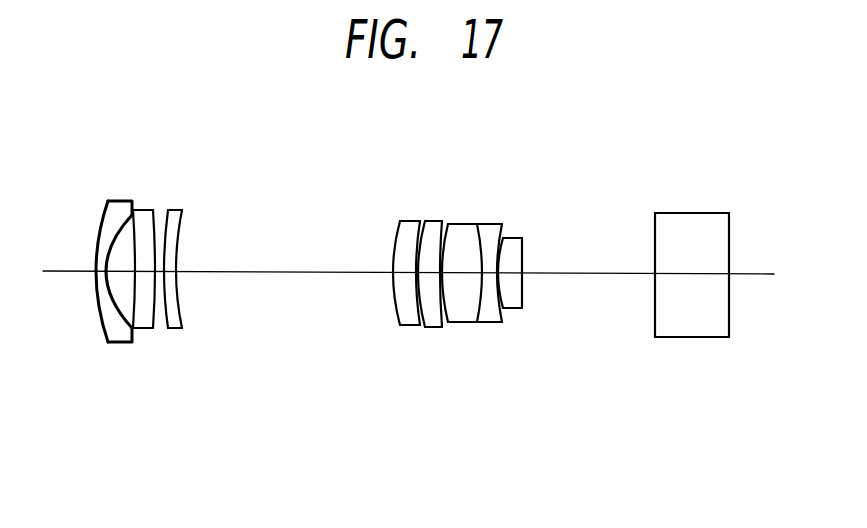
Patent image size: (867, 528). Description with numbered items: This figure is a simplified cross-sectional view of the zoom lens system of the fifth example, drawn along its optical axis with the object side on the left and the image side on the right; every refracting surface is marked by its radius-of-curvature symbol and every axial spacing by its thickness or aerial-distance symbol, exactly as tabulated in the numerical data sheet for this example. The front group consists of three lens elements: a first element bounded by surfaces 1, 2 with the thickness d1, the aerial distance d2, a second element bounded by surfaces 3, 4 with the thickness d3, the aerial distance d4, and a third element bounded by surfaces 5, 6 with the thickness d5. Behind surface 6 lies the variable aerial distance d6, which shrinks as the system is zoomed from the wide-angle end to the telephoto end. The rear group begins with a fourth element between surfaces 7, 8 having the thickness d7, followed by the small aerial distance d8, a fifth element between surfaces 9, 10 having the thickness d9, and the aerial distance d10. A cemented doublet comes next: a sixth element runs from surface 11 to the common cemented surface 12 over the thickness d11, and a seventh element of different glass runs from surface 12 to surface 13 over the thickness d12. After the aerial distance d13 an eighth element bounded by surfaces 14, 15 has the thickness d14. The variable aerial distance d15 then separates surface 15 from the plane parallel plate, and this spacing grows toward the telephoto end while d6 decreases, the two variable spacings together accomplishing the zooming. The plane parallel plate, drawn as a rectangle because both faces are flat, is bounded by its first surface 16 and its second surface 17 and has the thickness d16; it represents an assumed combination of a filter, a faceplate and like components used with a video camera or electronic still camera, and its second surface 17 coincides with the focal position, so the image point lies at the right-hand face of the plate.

The first lens surface 1 is at (105, 215).
The second lens surface 2 is at (132, 207).
The third lens surface 3 is at (133, 240).
The fourth lens surface 4 is at (157, 210).
The fifth lens surface 5 is at (167, 210).
The sixth lens surface 6 is at (185, 215).
The seventh lens surface 7 is at (400, 228).
The eighth lens surface 8 is at (421, 226).
The ninth lens surface 9 is at (424, 224).
The tenth lens surface 10 is at (450, 226).
The eleventh lens surface 11 is at (452, 226).
The twelfth lens surface 12 is at (479, 226).
The thirteenth lens surface 13 is at (503, 226).
The fourteenth lens surface 14 is at (508, 234).
The fifteenth lens surface 15 is at (524, 240).
The first surface of plane parallel plate 16 is at (655, 226).
The second surface of plane parallel plate 17 is at (729, 226).
The thickness of first lens element d1 is at (105, 342).
The aerial distance between first and second lens elements d2 is at (121, 329).
The thickness of second lens element d3 is at (140, 328).
The aerial distance between second and third lens elements d4 is at (158, 328).
The thickness of third lens element d5 is at (176, 328).
The variable aerial distance d6 is at (283, 272).
The thickness of fourth lens element d7 is at (401, 326).
The aerial distance between fourth and fifth lens elements d8 is at (415, 327).
The thickness of fifth lens element d9 is at (426, 328).
The aerial distance between fifth and sixth lens elements d10 is at (441, 328).
The thickness of sixth lens element d11 is at (460, 323).
The thickness of seventh lens element d12 is at (490, 323).
The aerial distance between seventh and eighth lens elements d13 is at (500, 323).
The thickness of eighth lens element d14 is at (514, 312).
The variable aerial distance d15 is at (590, 275).
The thickness of plane parallel plate d16 is at (693, 275).